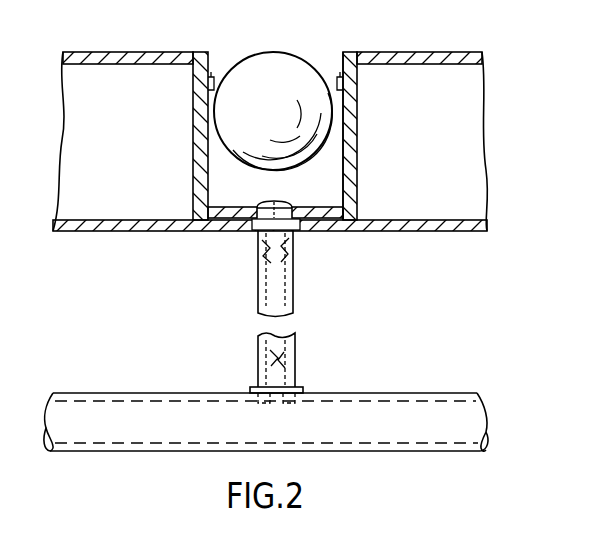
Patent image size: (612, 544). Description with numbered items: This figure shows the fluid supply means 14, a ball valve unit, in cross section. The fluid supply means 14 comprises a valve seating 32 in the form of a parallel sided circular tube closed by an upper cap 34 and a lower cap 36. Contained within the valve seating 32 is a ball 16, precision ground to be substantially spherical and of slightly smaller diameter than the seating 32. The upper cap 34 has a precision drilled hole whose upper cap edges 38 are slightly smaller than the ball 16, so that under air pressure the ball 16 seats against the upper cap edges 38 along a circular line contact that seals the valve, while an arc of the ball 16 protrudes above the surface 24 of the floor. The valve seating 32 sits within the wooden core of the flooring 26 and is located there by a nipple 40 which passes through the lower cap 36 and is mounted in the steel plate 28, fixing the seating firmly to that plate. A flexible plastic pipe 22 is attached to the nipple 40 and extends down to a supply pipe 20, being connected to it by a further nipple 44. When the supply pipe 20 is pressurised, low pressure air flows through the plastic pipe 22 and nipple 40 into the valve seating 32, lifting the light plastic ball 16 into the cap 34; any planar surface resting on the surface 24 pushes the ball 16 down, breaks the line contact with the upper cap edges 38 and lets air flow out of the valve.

The fluid supply means 14 is at (345, 50).
The ball 16 is at (266, 58).
The supply pipe 20 is at (90, 433).
The plastic pipe 22 is at (258, 350).
The surface of the floor 24 is at (452, 58).
The wooden core of the flooring 26 is at (486, 143).
The steel plate 28 is at (415, 228).
The valve seating 32 is at (358, 185).
The cap 34 is at (207, 90).
The lower cap 36 is at (237, 212).
The upper cap edges 38 is at (345, 90).
The nipple 40 is at (285, 238).
The nipple 44 is at (297, 372).